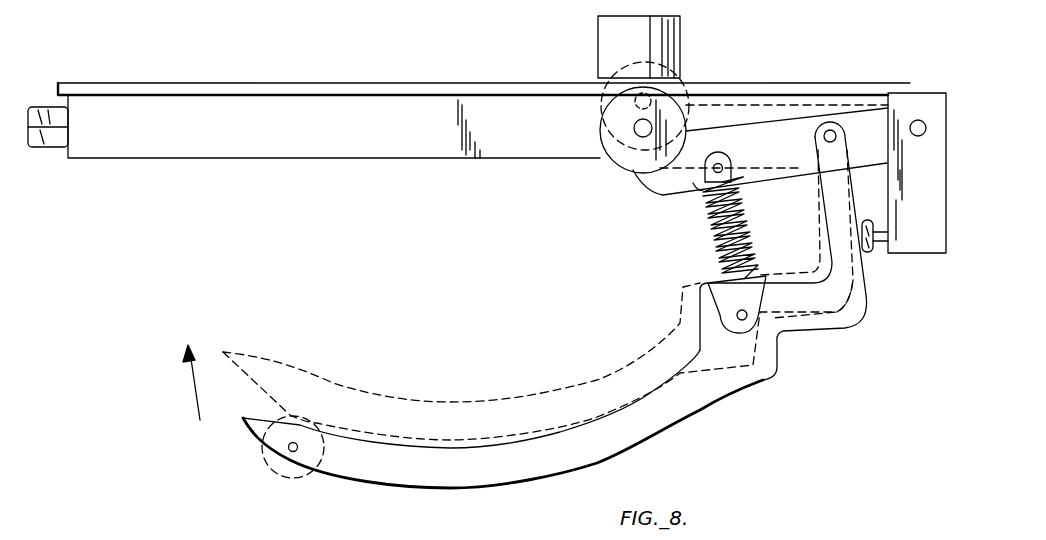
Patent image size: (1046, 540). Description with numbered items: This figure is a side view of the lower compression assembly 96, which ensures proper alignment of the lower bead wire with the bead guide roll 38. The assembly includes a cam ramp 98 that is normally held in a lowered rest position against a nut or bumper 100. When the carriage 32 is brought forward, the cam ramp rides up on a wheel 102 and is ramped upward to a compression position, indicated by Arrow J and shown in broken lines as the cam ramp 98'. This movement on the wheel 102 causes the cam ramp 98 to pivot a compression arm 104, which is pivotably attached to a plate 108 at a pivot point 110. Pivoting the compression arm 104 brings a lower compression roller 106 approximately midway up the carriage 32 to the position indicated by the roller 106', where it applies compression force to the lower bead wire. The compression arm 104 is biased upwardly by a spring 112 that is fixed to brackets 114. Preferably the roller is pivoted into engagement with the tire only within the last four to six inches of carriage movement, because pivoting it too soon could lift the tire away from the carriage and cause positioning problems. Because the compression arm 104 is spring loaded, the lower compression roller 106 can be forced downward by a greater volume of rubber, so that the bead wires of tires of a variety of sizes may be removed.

The carriage 32 is at (168, 148).
The bead guide roll 38 is at (610, 42).
The lower compression assembly 96 is at (820, 373).
The cam ramp 98 is at (503, 436).
The cam ramp in compression position 98' is at (538, 360).
The nut or bumper 100 is at (870, 255).
The wheel 102 is at (268, 470).
The compression arm 104 is at (672, 186).
The lower compression roller 106 is at (605, 145).
The lower compression roller in raised position 106' is at (599, 106).
The plate 108 is at (900, 240).
The pivot point 110 is at (918, 120).
The spring 112 is at (708, 236).
The brackets 114 is at (720, 180).
The arrow J is at (195, 398).